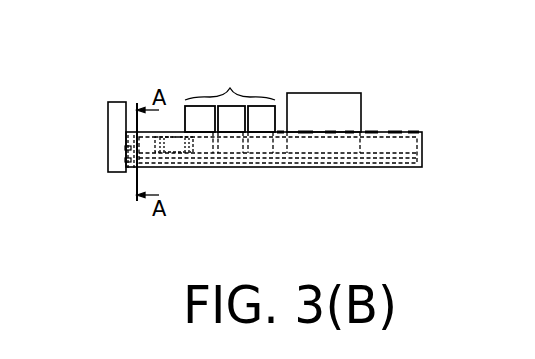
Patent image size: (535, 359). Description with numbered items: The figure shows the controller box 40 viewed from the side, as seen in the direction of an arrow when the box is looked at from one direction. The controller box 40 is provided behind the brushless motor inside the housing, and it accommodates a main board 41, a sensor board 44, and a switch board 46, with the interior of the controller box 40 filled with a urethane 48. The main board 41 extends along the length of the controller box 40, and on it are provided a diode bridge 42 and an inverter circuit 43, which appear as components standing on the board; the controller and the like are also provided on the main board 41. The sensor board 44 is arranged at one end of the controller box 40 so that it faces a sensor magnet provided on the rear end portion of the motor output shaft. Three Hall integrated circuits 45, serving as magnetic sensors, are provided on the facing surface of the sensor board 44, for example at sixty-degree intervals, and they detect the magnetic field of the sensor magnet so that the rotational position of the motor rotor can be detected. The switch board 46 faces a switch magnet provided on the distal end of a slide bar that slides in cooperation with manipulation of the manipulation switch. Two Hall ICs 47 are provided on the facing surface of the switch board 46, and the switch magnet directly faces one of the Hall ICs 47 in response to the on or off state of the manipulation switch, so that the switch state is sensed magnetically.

The controller box 40 is at (418, 170).
The main board 41 is at (278, 157).
The diode bridge 42 is at (325, 93).
The inverter circuit 43 is at (232, 88).
The sensor board 44 is at (128, 172).
The Hall integrated circuits (magnetic sensors) 45 is at (121, 162).
The switch board 46 is at (194, 147).
The Hall ICs (magnetic sensors) 47 is at (168, 143).
The urethane 48 is at (395, 132).